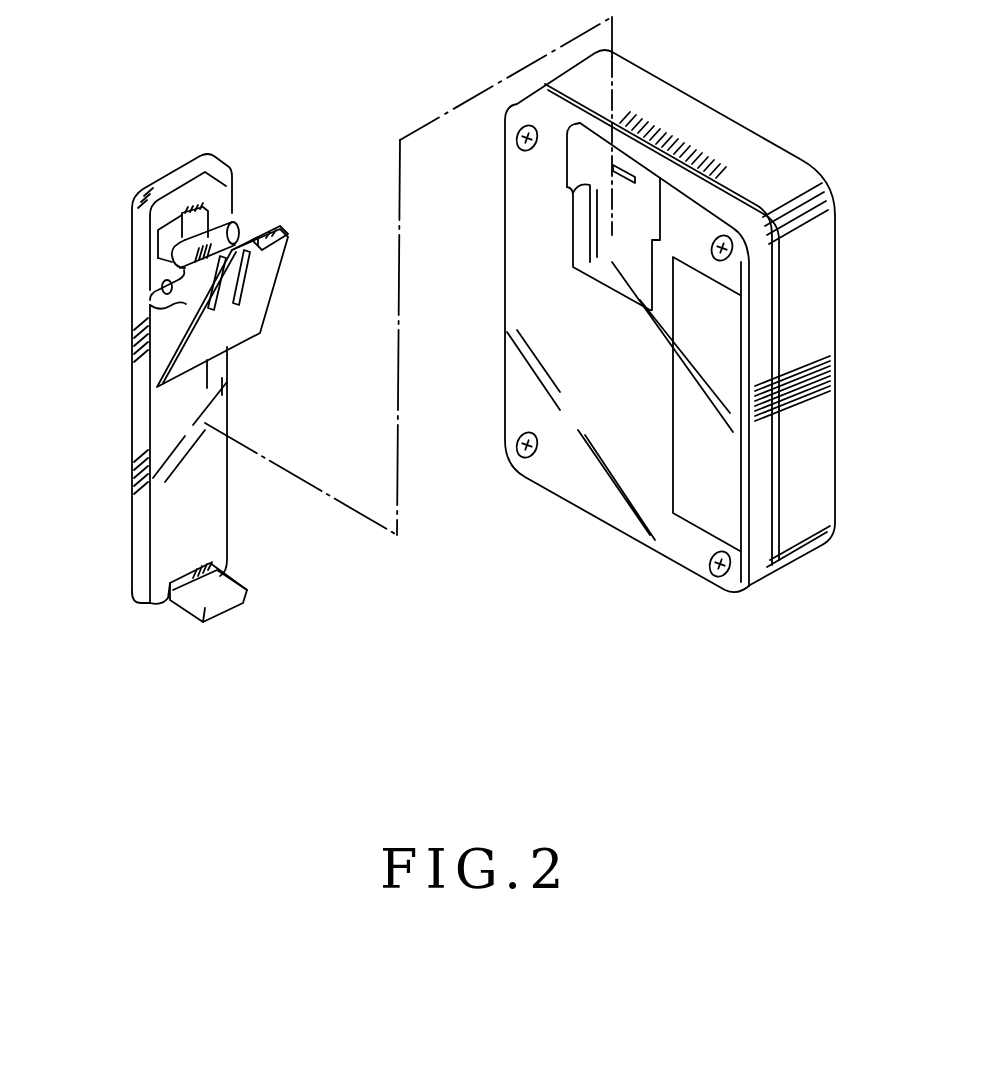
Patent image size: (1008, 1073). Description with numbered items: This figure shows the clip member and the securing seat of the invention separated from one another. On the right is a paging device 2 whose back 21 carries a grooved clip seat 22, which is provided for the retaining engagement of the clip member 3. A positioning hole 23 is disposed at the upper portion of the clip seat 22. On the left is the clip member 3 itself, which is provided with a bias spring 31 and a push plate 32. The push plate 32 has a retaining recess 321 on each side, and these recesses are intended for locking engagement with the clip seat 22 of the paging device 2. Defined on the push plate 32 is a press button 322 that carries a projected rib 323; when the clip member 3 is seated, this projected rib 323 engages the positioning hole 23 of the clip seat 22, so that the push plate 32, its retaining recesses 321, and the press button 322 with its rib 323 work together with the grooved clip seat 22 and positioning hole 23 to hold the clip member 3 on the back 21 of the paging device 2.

The paging device 2 is at (693, 321).
The back 21 is at (590, 354).
The clip seat 22 is at (546, 225).
The positioning hole 23 is at (537, 208).
The clip member 3 is at (153, 388).
The bias spring 31 is at (204, 171).
The push plate 32 is at (234, 312).
The retaining recess 321 is at (179, 227).
The press button 322 is at (297, 276).
The projected rib 323 is at (281, 302).